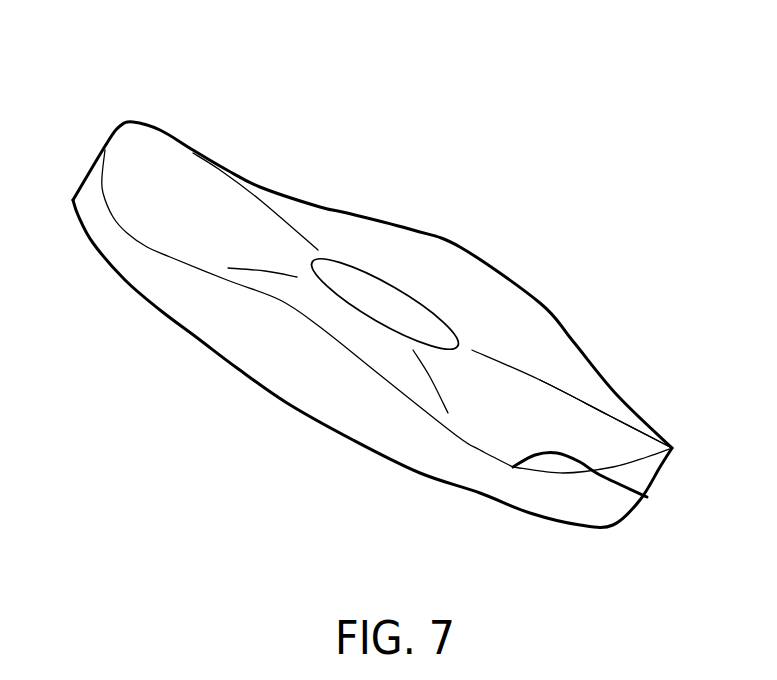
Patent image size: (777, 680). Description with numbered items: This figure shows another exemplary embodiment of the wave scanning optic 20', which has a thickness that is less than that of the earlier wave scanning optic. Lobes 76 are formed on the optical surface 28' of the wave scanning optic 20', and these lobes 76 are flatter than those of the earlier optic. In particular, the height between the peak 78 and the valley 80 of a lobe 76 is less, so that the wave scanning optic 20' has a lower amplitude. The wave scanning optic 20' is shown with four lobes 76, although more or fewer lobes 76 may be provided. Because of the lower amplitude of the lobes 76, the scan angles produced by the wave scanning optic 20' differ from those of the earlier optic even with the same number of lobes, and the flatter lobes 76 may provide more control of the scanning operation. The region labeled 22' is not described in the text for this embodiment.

The wave scanning optic 20' is at (352, 271).
The optical surface 28' is at (250, 157).
The lobe 76 is at (453, 283).
The distal portion 22' is at (572, 323).
The peak 78 is at (580, 402).
The valley 80 is at (647, 497).